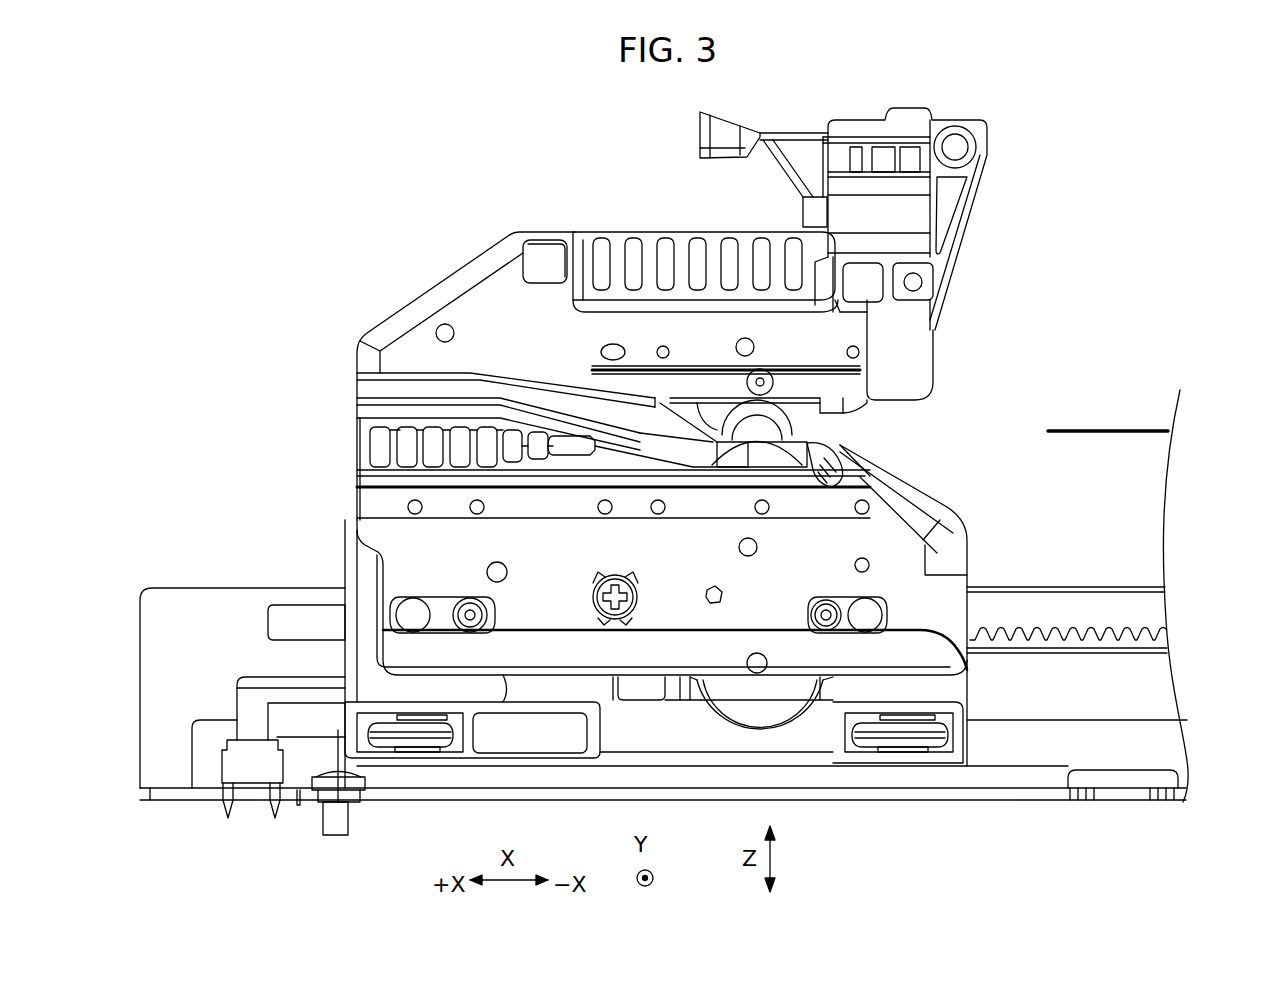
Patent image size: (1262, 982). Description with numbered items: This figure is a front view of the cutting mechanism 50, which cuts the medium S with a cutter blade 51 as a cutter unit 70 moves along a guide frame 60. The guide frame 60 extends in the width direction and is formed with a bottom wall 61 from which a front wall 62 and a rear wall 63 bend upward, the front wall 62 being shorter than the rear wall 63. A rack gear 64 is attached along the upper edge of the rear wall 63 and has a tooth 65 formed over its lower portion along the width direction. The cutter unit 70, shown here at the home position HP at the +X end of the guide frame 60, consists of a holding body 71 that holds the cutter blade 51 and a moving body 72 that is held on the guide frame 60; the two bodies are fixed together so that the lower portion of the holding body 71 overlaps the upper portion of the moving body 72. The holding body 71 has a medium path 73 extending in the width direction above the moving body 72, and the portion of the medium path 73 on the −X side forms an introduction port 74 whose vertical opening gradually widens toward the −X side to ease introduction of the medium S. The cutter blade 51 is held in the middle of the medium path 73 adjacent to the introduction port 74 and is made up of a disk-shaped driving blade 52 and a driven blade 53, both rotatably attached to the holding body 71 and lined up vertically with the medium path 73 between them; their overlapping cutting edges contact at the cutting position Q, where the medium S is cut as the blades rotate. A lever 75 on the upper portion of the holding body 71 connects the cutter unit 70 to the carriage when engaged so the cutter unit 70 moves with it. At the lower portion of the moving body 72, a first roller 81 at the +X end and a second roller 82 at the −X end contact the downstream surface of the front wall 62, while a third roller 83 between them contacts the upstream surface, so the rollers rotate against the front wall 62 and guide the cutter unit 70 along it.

The cutting mechanism 50 is at (1108, 145).
The cutter blade 51 is at (781, 392).
The driving blade 52 is at (713, 462).
The driven blade 53 is at (712, 428).
The guide frame 60 is at (283, 578).
The bottom wall 61 is at (208, 782).
The front wall 62 is at (1012, 770).
The rear wall 63 is at (188, 612).
The rack gear 64 is at (1097, 608).
The tooth 65 is at (1112, 640).
The cutter unit 70 is at (478, 238).
The holding body 71 is at (552, 240).
The moving body 72 is at (562, 767).
The medium path 73 is at (821, 435).
The introduction port 74 is at (912, 432).
The lever 75 is at (727, 112).
The first roller 81 is at (450, 727).
The second roller 82 is at (937, 748).
The third roller 83 is at (700, 716).
The home position HP is at (305, 398).
The cutting position Q is at (780, 431).
The medium S is at (1108, 428).